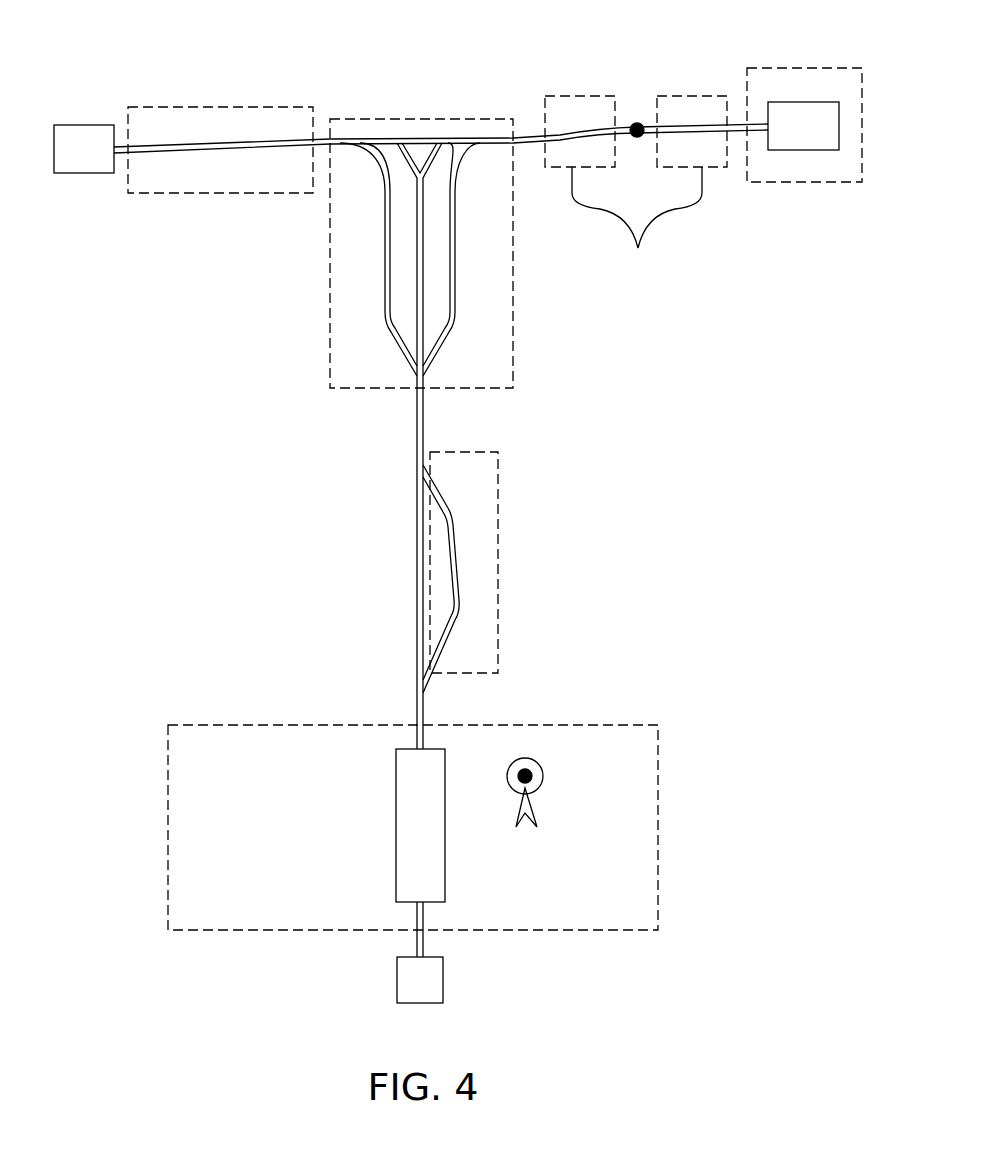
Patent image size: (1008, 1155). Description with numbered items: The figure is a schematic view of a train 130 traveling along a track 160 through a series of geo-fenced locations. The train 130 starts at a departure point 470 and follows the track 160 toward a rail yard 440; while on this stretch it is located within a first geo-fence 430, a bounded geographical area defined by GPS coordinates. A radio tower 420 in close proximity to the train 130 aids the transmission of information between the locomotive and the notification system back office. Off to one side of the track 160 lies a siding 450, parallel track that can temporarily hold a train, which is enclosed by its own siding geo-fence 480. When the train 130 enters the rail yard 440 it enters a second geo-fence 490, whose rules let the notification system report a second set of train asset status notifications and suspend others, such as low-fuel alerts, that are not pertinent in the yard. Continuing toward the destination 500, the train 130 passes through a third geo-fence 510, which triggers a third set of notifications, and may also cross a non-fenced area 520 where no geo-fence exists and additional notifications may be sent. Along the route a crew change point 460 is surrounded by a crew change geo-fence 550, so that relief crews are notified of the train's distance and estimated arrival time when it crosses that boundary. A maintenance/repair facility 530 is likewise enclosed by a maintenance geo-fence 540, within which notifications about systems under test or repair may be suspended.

The train 130 is at (420, 825).
The track 160 is at (424, 945).
The radio tower 420 is at (535, 804).
The geo-fence 430 is at (606, 725).
The rail yard 440 is at (420, 136).
The siding 450 is at (466, 582).
The crew change point 460 is at (637, 122).
The departure point 470 is at (420, 980).
The siding geo-fence 480 is at (498, 500).
The second geo-fence 490 is at (352, 118).
The destination 500 is at (84, 149).
The third geo-fence 510 is at (220, 107).
The non-fenced area 520 is at (397, 418).
The maintenance/repair facility 530 is at (803, 126).
The maintenance geo-fence 540 is at (803, 68).
The crew change geo-fence 550 is at (636, 187).